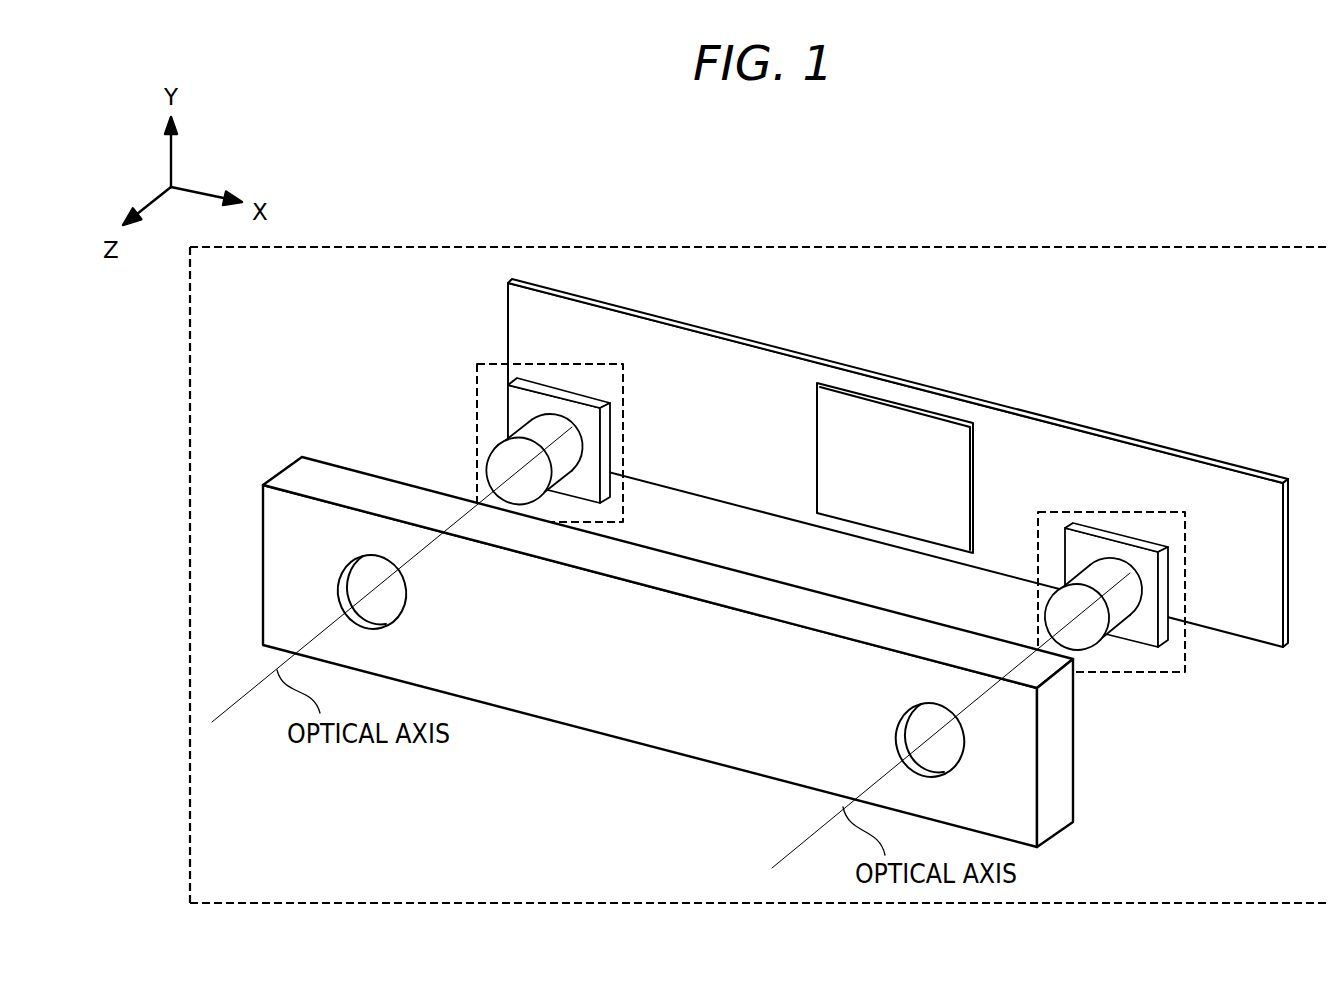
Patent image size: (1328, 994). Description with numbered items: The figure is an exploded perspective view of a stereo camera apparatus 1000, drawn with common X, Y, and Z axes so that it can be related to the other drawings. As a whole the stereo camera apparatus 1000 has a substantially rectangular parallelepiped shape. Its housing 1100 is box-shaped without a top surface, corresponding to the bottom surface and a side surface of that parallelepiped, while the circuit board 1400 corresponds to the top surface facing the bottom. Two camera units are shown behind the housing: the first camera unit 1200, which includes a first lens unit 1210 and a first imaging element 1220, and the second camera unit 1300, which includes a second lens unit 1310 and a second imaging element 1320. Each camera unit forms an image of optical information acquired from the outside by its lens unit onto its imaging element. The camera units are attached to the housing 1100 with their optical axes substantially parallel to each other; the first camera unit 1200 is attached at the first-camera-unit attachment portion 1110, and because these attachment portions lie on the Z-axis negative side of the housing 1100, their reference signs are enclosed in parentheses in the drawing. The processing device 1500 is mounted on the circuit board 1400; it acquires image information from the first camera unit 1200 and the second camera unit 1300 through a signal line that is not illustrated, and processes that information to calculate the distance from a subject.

The stereo camera apparatus 1000 is at (908, 248).
The housing 1100 is at (712, 636).
The first-camera-unit attachment portion 1110 is at (358, 545).
The first camera unit 1200 is at (548, 402).
The first lens unit 1210 is at (500, 465).
The first imaging element 1220 is at (527, 405).
The second camera unit 1300 is at (1170, 576).
The second lens unit 1310 is at (1115, 618).
The second imaging element 1320 is at (1147, 617).
The circuit board 1400 is at (1068, 460).
The processing device 1500 is at (867, 427).